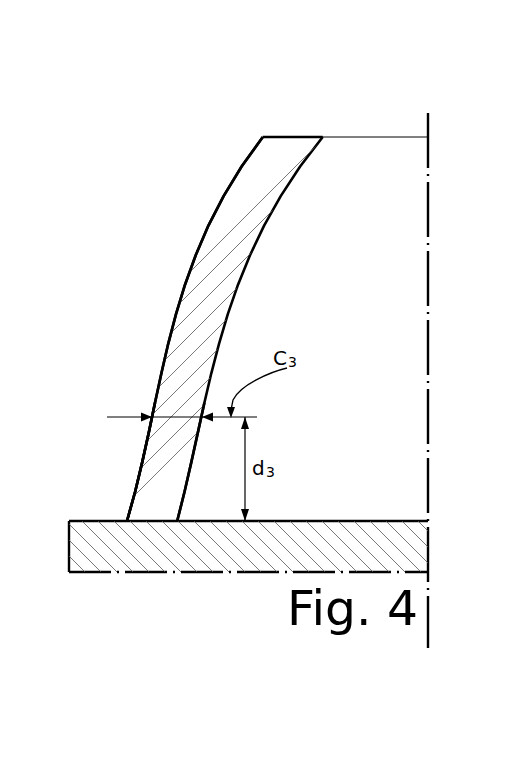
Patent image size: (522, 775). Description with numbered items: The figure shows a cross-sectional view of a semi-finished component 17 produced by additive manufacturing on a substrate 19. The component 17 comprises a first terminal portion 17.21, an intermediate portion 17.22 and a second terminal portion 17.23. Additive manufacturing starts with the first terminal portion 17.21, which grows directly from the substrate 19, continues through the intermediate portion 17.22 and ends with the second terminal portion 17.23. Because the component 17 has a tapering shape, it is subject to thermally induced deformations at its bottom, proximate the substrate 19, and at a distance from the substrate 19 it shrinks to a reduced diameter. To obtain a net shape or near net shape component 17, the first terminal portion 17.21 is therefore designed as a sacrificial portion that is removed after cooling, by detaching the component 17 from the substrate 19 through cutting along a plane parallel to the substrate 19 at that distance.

The semi-finished component 17 is at (171, 230).
The first terminal portion 17.21 is at (152, 457).
The intermediate portion 17.22 is at (173, 322).
The second terminal portion 17.23 is at (290, 137).
The substrate 19 is at (108, 537).